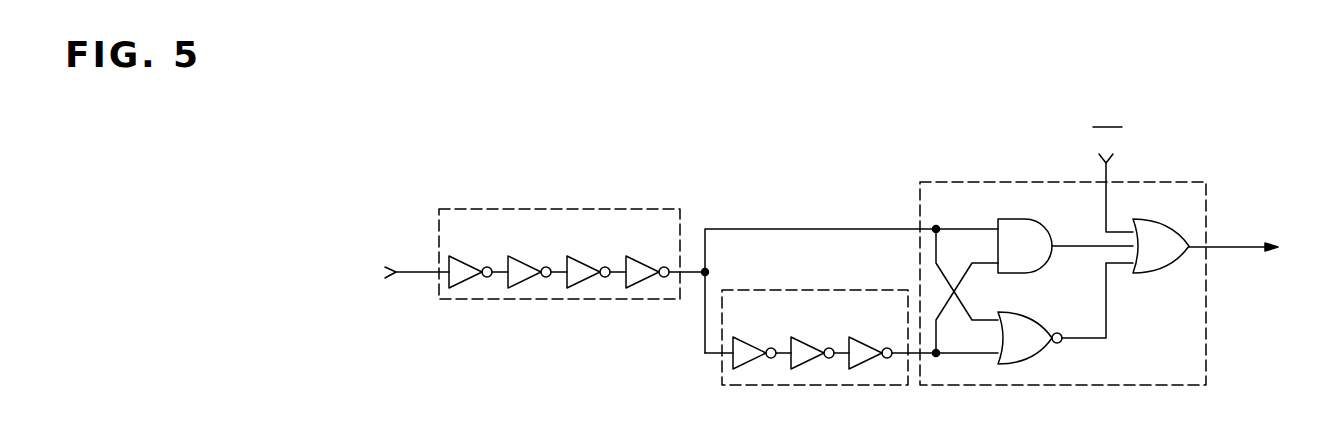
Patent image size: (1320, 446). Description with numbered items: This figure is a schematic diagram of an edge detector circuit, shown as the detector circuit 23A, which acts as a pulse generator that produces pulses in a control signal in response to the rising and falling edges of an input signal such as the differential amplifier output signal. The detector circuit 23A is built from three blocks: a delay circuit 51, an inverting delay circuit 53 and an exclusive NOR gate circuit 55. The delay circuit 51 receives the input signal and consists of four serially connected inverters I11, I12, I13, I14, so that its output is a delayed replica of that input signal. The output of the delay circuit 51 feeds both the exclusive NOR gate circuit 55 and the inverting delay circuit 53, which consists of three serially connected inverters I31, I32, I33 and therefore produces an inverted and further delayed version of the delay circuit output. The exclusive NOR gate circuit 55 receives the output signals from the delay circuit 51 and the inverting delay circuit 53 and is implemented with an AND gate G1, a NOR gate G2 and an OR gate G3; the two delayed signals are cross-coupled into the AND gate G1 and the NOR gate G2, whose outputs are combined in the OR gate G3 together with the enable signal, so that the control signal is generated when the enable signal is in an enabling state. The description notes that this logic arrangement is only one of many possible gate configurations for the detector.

The detector circuit 23A is at (1203, 107).
The delay circuit 51 is at (551, 209).
The inverting delay circuit 53 is at (833, 290).
The exclusive NOR gate circuit 55 is at (966, 182).
The inverter I11 is at (466, 256).
The inverter I12 is at (525, 256).
The inverter I13 is at (584, 256).
The inverter I14 is at (643, 256).
The inverter I31 is at (748, 337).
The inverter I32 is at (806, 337).
The inverter I33 is at (864, 337).
The AND gate G1 is at (1048, 228).
The NOR gate G2 is at (1045, 322).
The OR gate G3 is at (1148, 273).